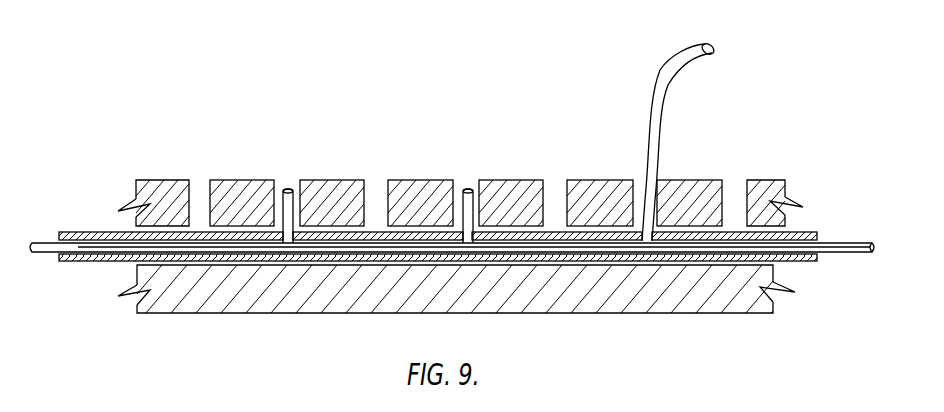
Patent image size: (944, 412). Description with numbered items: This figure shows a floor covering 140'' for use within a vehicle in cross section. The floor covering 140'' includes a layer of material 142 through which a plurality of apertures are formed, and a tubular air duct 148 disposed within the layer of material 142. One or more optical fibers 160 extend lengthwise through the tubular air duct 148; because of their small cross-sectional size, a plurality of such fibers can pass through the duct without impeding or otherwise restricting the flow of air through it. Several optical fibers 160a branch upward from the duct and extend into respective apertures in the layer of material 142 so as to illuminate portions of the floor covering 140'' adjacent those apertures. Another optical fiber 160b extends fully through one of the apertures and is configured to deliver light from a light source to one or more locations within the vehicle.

The floor covering 140'' is at (471, 204).
The layer of material 142 is at (143, 178).
The tubular air duct 148 is at (167, 256).
The optical fibers 160 is at (835, 238).
The optical fibers 160a is at (468, 186).
The optical fiber 160b is at (653, 163).